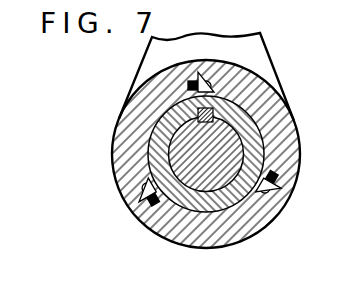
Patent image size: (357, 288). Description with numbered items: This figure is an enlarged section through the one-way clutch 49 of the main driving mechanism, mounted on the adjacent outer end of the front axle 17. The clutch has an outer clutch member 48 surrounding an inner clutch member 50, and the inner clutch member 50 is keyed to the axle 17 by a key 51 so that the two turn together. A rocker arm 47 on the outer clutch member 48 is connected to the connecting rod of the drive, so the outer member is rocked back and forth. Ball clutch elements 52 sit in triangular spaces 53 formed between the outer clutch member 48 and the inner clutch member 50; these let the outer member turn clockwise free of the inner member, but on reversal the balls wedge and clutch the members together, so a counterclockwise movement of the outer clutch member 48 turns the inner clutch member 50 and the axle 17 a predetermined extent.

The front axle 17 is at (228, 147).
The rocker arm 47 is at (267, 46).
The outer clutch member 48 is at (227, 233).
The one-way clutch 49 is at (165, 246).
The inner clutch member 50 is at (158, 137).
The key 51 is at (213, 114).
The ball clutch elements 52 is at (208, 81).
The triangular spaces 53 is at (216, 89).